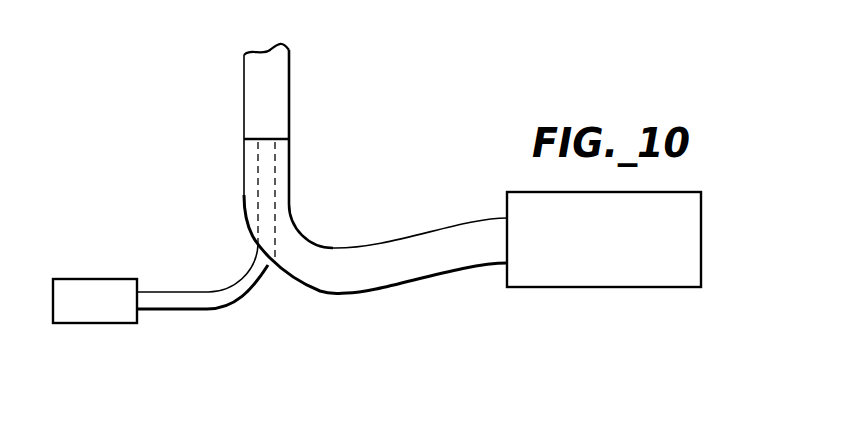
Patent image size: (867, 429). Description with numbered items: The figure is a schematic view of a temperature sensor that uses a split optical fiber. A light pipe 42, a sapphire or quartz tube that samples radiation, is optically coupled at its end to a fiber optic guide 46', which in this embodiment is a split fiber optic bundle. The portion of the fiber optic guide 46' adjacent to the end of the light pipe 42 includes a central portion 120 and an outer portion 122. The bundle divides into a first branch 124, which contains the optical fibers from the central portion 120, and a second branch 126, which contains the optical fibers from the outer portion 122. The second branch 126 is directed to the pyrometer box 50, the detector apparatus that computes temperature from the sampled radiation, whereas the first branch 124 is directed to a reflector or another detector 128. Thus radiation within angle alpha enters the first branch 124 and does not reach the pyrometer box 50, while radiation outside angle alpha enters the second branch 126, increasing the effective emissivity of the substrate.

The light pipe 42 is at (289, 98).
The fiber optic guide 46' is at (305, 216).
The central portion 120 is at (267, 157).
The outer portion 122 is at (248, 183).
The first branch 124 is at (220, 285).
The second branch 126 is at (372, 255).
The reflector or another detector 128 is at (110, 279).
The pyrometer box 50 is at (702, 243).